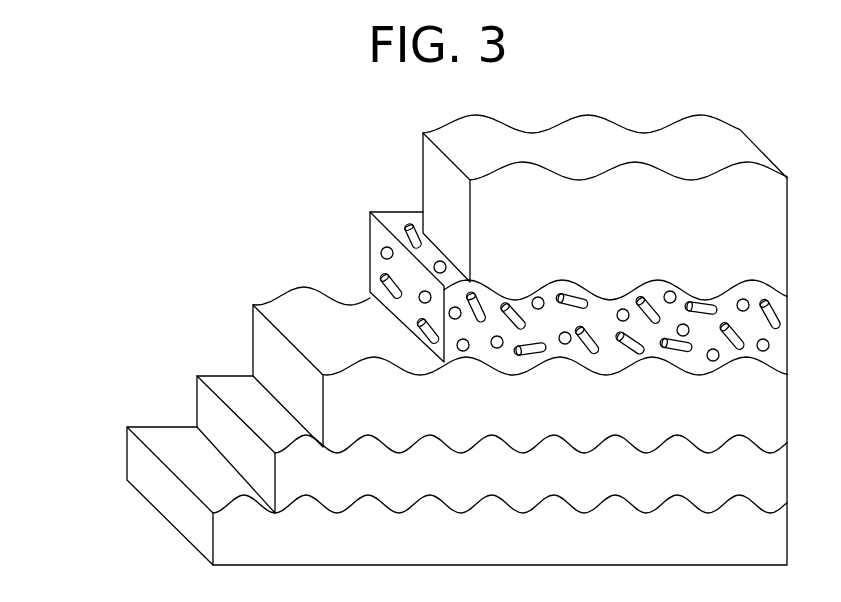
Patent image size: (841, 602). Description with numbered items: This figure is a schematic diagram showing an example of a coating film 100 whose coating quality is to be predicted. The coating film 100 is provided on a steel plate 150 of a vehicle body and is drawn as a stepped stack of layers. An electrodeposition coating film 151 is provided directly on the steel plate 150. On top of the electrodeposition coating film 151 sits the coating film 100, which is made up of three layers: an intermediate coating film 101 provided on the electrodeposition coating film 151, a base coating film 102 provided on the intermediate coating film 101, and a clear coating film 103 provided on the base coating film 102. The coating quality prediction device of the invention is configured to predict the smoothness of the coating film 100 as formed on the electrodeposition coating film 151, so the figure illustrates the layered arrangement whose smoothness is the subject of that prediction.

The coating film 100 is at (267, 118).
The intermediate coating film 101 is at (305, 303).
The base coating film 102 is at (377, 238).
The clear coating film 103 is at (423, 181).
The steel plate 150 is at (137, 458).
The electrodeposition coating film 151 is at (205, 405).